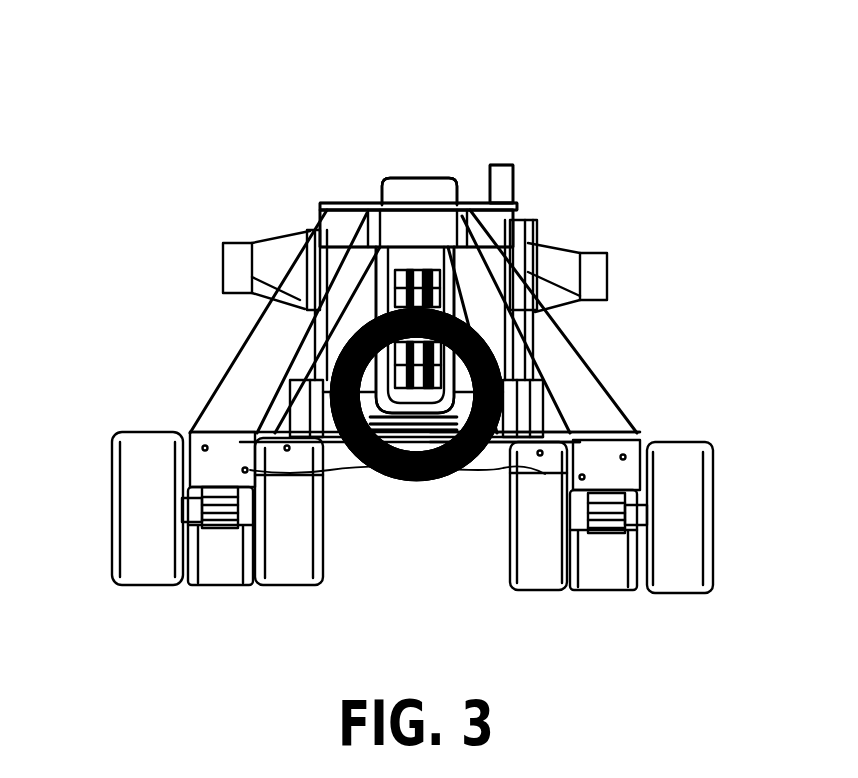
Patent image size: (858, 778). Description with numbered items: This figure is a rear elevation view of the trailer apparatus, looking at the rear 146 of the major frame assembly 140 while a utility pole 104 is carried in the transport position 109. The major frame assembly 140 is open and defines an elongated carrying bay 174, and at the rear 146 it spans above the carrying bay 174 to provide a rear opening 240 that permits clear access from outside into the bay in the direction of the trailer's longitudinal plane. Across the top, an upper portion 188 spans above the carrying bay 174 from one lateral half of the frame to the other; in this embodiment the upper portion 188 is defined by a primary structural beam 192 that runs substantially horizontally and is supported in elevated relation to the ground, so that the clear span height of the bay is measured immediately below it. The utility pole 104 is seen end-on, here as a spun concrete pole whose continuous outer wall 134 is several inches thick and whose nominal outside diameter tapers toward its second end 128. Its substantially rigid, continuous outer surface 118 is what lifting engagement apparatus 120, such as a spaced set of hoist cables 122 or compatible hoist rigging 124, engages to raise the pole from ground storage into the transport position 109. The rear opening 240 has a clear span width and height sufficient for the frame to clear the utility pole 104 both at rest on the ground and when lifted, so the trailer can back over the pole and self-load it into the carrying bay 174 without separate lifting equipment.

The major frame assembly 140 is at (383, 205).
The upper portion 188 is at (383, 205).
The primary structural beam 192 is at (383, 205).
The lifting engagement apparatus 120 is at (478, 312).
The hoist cables 122 is at (480, 308).
The hoist rigging 124 is at (480, 308).
The rear 146 is at (568, 372).
The outer surface 118 is at (353, 467).
The utility pole 104 is at (428, 483).
The outer wall 134 is at (428, 483).
The second end 128 is at (428, 483).
The carrying bay 174 is at (396, 535).
The rear opening 240 is at (392, 545).
The transport position 109 is at (474, 470).